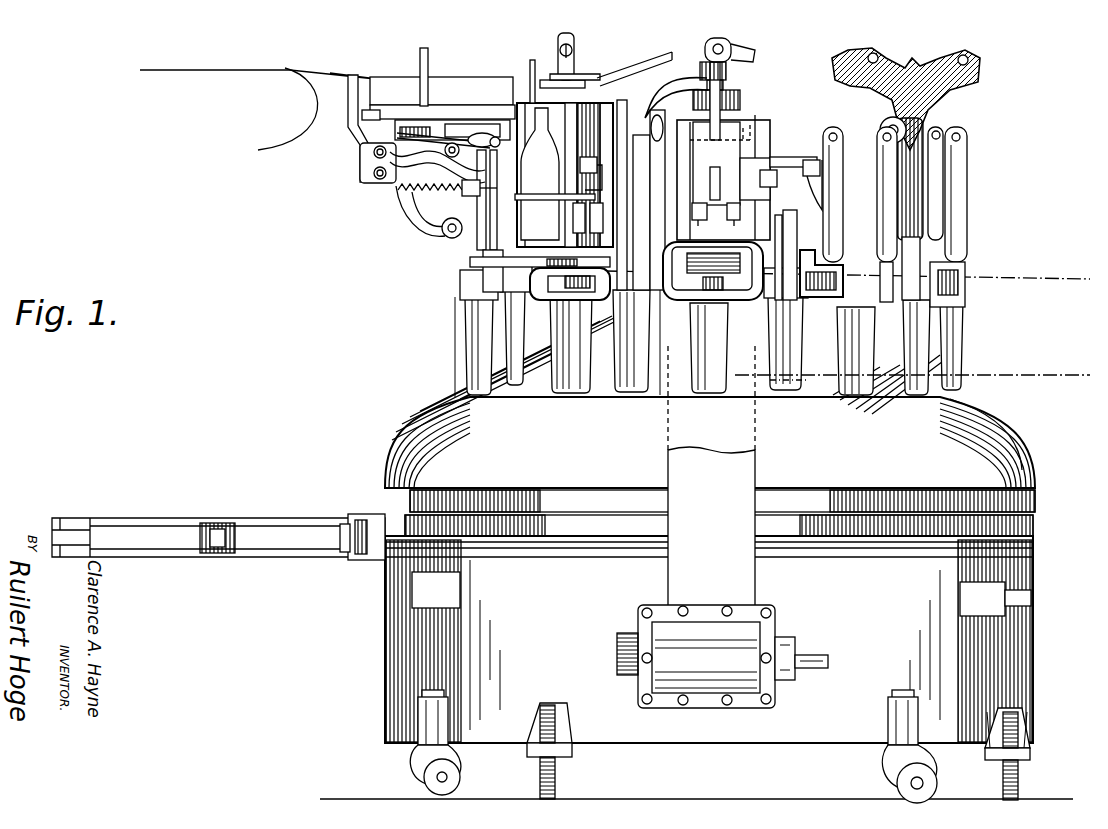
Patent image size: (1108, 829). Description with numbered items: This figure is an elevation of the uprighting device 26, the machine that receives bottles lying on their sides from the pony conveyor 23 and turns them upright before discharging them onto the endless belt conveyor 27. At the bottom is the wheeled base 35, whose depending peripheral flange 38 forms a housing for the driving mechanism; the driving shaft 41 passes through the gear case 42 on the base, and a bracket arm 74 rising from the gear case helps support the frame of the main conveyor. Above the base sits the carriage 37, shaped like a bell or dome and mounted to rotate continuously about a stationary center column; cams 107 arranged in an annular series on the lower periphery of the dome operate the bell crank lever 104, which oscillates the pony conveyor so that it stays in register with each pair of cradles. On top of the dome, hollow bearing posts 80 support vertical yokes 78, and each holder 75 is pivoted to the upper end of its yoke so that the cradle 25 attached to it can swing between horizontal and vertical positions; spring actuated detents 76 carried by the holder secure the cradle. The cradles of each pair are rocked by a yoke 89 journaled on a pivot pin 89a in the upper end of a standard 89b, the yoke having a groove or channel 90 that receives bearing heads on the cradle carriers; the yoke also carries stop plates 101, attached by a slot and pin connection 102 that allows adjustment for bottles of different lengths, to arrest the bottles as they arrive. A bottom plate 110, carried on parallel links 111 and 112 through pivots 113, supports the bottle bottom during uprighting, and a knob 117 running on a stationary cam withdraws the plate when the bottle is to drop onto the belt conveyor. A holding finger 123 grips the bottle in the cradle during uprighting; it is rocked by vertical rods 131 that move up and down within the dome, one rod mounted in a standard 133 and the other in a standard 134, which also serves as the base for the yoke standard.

The endless conveyor 23 is at (221, 68).
The cradle 25 is at (440, 78).
The uprighting device 26 is at (376, 460).
The endless belt conveyor 27 is at (1055, 285).
The wheeled base 35 is at (376, 610).
The carriage 37 is at (1010, 420).
The depending peripheral flange 38 is at (812, 740).
The driving shaft 41 is at (820, 660).
The gear case 42 is at (750, 636).
The bracket arm 74 is at (678, 470).
The holder 75 is at (470, 125).
The spring actuated detent 76 is at (962, 208).
The vertical yoke 78 is at (738, 300).
The bearing sleeve or post 80 is at (481, 350).
The yoke 89 is at (672, 56).
The pivot pin 89a is at (882, 124).
The standard 89b is at (940, 130).
The groove or channel 90 is at (740, 68).
The stop plate 101 is at (580, 74).
The slot and pin connection 102 is at (560, 52).
The bell crank lever 104 is at (166, 518).
The cam 107 is at (1033, 526).
The bottom plate 110 is at (349, 95).
The link 111 is at (407, 158).
The link 112 is at (400, 186).
The pivot 113 is at (373, 172).
The knob 117 is at (448, 237).
The holding rod or finger 123 is at (548, 200).
The vertical rod 131 is at (798, 235).
The standard 133 is at (800, 385).
The standard 134 is at (465, 320).